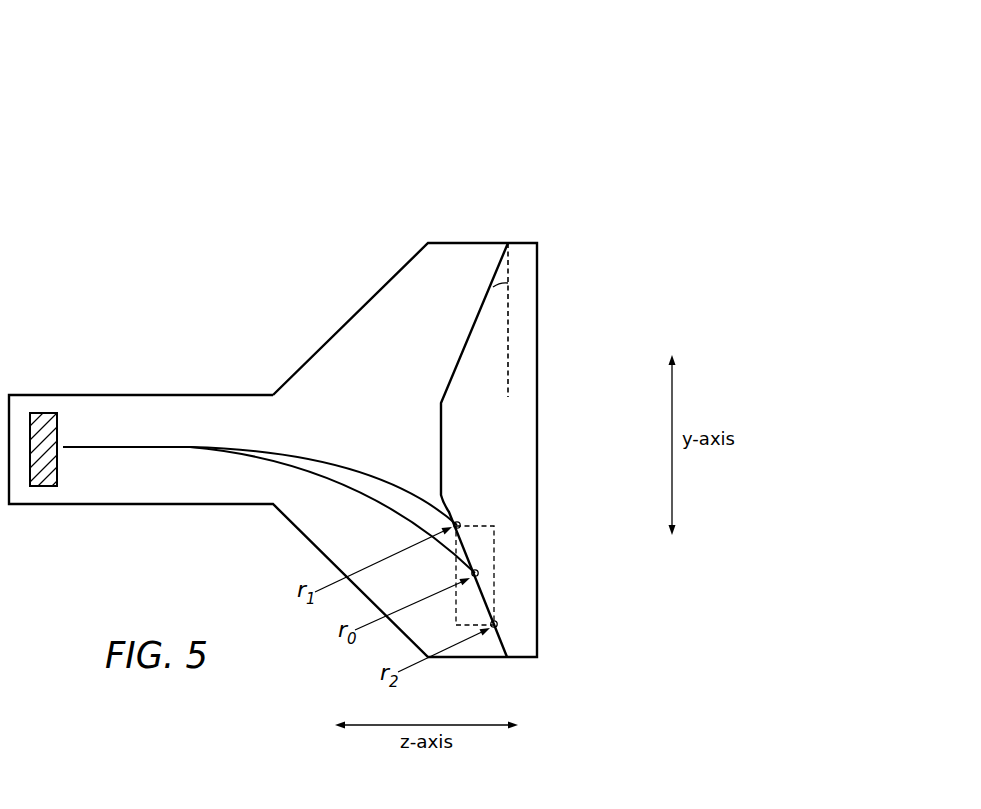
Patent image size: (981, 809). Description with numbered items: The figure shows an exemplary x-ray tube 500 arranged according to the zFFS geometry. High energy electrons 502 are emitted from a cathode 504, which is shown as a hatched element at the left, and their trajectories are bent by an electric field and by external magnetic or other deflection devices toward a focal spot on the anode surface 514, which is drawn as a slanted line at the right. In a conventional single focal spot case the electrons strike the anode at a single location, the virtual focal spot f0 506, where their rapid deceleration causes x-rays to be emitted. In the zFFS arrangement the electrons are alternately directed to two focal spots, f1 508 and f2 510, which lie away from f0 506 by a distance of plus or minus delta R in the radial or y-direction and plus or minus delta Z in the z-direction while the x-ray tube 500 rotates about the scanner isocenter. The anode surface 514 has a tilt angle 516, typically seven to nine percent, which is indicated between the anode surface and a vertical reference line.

The x-ray tube 500 is at (482, 86).
The high energy electrons 502 is at (268, 460).
The cathode 504 is at (43, 413).
The focal spot f0 506 is at (478, 572).
The focal spot f1 508 is at (459, 520).
The focal spot f2 510 is at (497, 623).
The anode surface 514 is at (460, 355).
The tilt angle 516 is at (500, 312).